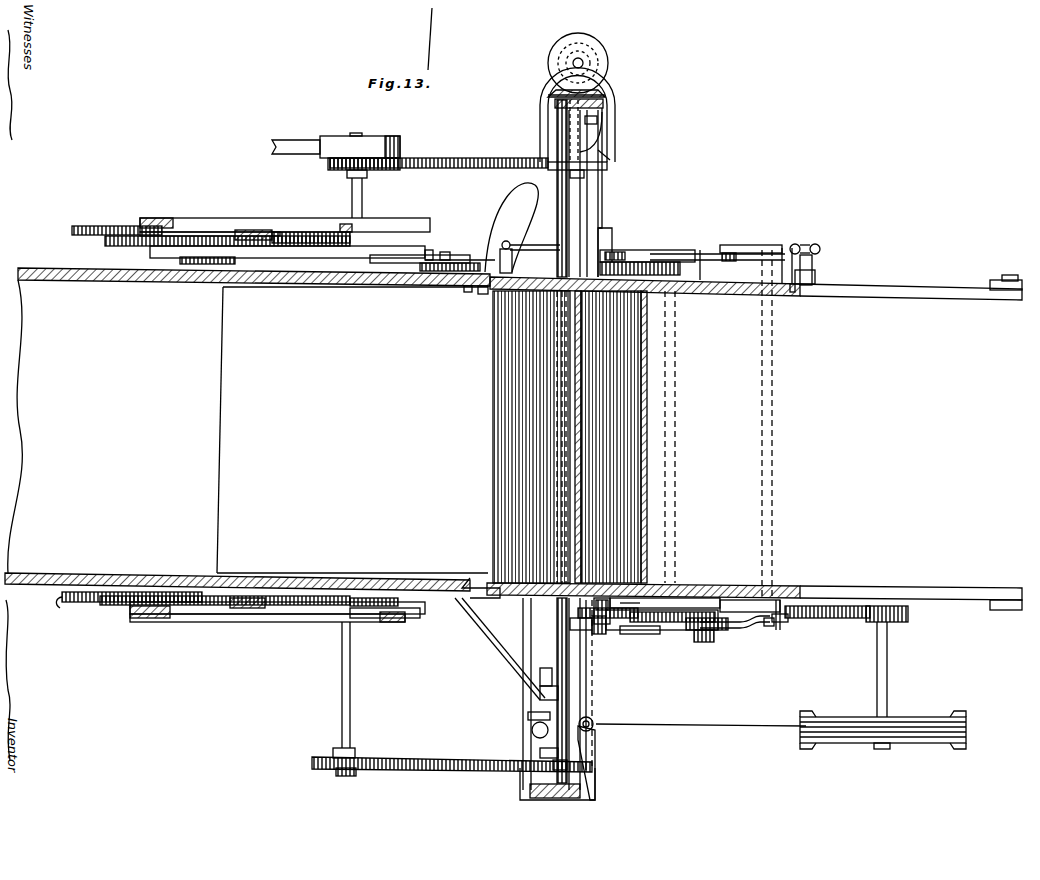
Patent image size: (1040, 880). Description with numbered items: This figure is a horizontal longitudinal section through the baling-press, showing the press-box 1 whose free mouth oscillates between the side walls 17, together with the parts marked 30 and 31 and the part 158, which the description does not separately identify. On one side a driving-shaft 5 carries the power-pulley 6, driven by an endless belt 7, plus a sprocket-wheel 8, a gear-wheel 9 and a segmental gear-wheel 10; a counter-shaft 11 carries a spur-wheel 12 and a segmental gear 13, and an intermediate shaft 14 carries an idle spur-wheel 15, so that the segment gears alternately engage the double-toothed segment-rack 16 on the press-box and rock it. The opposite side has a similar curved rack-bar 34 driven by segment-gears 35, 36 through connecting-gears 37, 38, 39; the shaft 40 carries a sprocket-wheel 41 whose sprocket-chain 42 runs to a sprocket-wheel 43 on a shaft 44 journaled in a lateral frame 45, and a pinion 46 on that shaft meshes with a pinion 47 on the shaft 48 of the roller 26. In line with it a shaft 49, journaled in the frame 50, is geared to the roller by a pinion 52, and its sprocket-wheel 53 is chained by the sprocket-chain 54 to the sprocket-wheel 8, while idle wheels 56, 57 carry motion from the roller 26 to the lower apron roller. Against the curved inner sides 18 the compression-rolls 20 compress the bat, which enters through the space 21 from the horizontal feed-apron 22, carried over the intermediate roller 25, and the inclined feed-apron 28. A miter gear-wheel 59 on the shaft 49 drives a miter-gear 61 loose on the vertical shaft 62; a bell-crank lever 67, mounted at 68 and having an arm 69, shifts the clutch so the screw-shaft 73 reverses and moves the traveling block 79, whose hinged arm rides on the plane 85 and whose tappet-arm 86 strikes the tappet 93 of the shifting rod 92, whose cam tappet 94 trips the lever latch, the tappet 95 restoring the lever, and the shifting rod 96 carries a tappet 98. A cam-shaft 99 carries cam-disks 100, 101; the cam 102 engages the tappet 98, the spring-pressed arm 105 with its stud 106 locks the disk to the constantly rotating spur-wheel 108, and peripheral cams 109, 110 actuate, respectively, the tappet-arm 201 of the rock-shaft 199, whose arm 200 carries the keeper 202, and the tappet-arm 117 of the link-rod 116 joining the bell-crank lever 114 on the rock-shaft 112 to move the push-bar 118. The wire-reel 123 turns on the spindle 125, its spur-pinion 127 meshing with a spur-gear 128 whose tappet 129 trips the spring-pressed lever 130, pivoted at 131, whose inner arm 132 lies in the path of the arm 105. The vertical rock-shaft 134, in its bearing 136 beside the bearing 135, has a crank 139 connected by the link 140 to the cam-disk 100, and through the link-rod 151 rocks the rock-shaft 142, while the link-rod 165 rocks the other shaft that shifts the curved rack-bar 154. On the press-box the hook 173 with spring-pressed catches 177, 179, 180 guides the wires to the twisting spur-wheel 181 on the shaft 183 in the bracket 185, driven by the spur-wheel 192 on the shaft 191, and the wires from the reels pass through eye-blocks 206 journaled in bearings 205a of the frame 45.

The housing box 1 is at (311, 430).
The shaft 5 is at (364, 194).
The gear housing 6 is at (398, 140).
The arm 7 is at (292, 140).
The gear 8 is at (332, 164).
The plate 9 is at (380, 232).
The plate 10 is at (416, 222).
The block 11 is at (150, 218).
The rack 12 is at (106, 242).
The rack 13 is at (82, 226).
The plate 14 is at (250, 250).
The block 15 is at (224, 238).
The rack 16 is at (262, 236).
The frame 17 is at (718, 296).
The plate 18 is at (508, 573).
The cylinder 20 is at (494, 441).
The shaft 21 is at (608, 572).
The beam 22 is at (754, 438).
The bracket 25 is at (996, 294).
The inner cylinder 26 is at (611, 437).
The cylinder wall 28 is at (642, 426).
The wall 30 is at (26, 392).
The plate 31 is at (54, 268).
The plate 34 is at (267, 633).
The plate 35 is at (412, 618).
The hook 36 is at (65, 616).
The rack 37 is at (394, 600).
The rack 38 is at (280, 598).
The rack 39 is at (160, 596).
The shaft 40 is at (352, 690).
The bearing 41 is at (334, 756).
The rack 42 is at (430, 760).
The frame 43 is at (596, 770).
The rod 44 is at (566, 680).
The base block 45 is at (530, 792).
The bracket 46 is at (584, 632).
The gear 47 is at (598, 622).
The housing 48 is at (614, 252).
The column 49 is at (588, 198).
The cap 50 is at (606, 98).
The rack 52 is at (640, 262).
The shaft 53 is at (608, 165).
The rack 54 is at (460, 162).
The shaft 56 is at (596, 294).
The arm 57 is at (612, 162).
The block 59 is at (556, 103).
The pulley 61 is at (609, 58).
The pulley hub 62 is at (566, 63).
The arm 67 is at (608, 156).
The belt 68 is at (604, 140).
The belt loop 69 is at (612, 88).
The column 73 is at (566, 206).
The block 79 is at (540, 690).
The rod 85 is at (530, 650).
The block 86 is at (540, 674).
The rack 92 is at (557, 135).
The block 93 is at (540, 752).
The block 94 is at (598, 120).
The shaft 95 is at (560, 151).
The casing 96 is at (604, 206).
The casing step 98 is at (612, 232).
The rod 99 is at (702, 256).
The arm 100 is at (714, 254).
The frame 101 is at (650, 632).
The link 102 is at (660, 248).
The gear 105 is at (716, 642).
The gear 106 is at (700, 634).
The bracket 108 is at (730, 600).
The plate 109 is at (632, 636).
The lever 110 is at (750, 624).
The rod 112 is at (786, 425).
The rod 114 is at (781, 570).
The bar 116 is at (680, 598).
The rack 117 is at (672, 624).
The bracket 118 is at (604, 600).
The foot 123 is at (920, 717).
The shaft 125 is at (877, 674).
The gear 127 is at (910, 616).
The spring stack 128 is at (848, 620).
The rack 129 is at (800, 612).
The block 130 is at (784, 624).
The post 131 is at (776, 632).
The pivot 132 is at (724, 640).
The bracket 134 is at (784, 252).
The pin 135 is at (788, 286).
The block 136 is at (812, 278).
The link 139 is at (818, 250).
The link 140 is at (802, 244).
The spring 142 is at (514, 248).
The knob 151 is at (526, 248).
The plate 154 is at (390, 264).
The bracket 158 is at (684, 296).
The bar 165 is at (756, 246).
The brace 173 is at (482, 610).
The bracket 177 is at (468, 580).
The pin 179 is at (474, 294).
The pin 180 is at (488, 296).
The rack 181 is at (450, 288).
The pin 183 is at (450, 256).
The stop 185 is at (436, 252).
The rack 191 is at (414, 256).
The plate 192 is at (414, 292).
The rod 199 is at (570, 700).
The roller 200 is at (532, 732).
The gear 201 is at (602, 640).
The block 202 is at (528, 716).
The link 205a is at (598, 742).
The rod 206 is at (600, 726).